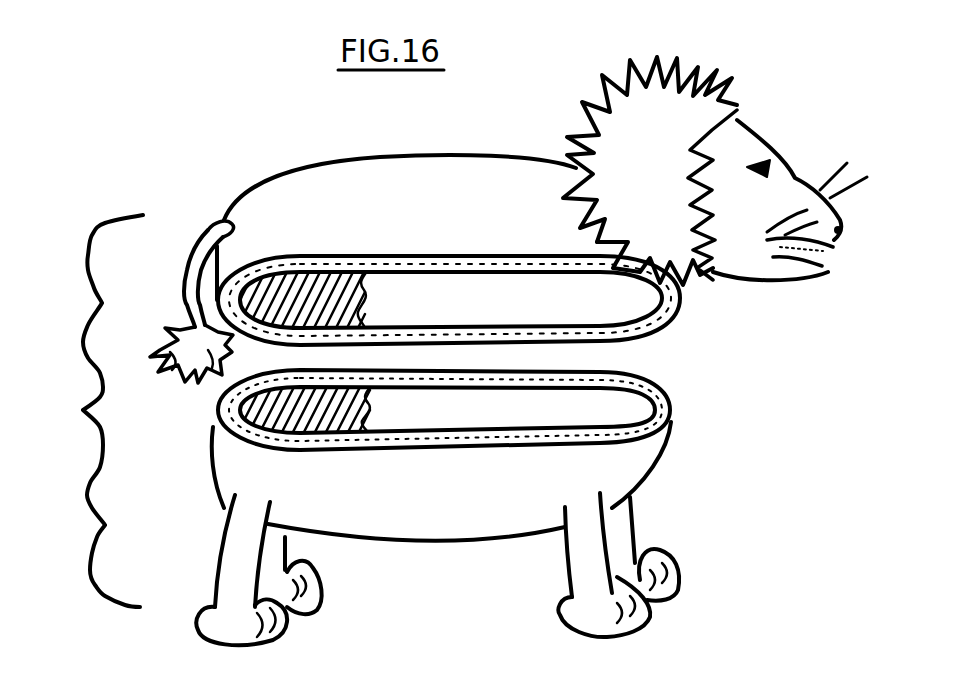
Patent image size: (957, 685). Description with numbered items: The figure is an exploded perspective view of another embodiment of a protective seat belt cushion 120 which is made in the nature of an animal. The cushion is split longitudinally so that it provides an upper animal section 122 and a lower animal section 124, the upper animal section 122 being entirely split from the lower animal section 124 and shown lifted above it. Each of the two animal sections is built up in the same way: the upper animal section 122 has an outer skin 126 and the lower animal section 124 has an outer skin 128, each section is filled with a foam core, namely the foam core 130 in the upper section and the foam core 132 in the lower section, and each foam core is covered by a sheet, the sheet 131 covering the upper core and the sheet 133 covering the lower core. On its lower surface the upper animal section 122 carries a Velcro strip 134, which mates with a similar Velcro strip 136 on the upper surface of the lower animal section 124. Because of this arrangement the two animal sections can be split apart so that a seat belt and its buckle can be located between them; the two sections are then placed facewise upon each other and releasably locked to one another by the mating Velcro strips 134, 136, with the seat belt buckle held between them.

The seat belt cushion 120 is at (498, 141).
The upper animal section 122 is at (345, 178).
The lower animal section 124 is at (480, 520).
The outer skin 126 is at (260, 225).
The outer skin 128 is at (360, 507).
The foam core 130 is at (253, 300).
The sheet 131 is at (580, 298).
The foam core 132 is at (232, 413).
The sheet 133 is at (607, 403).
The Velcro strip 134 is at (451, 262).
The Velcro strip 136 is at (648, 427).